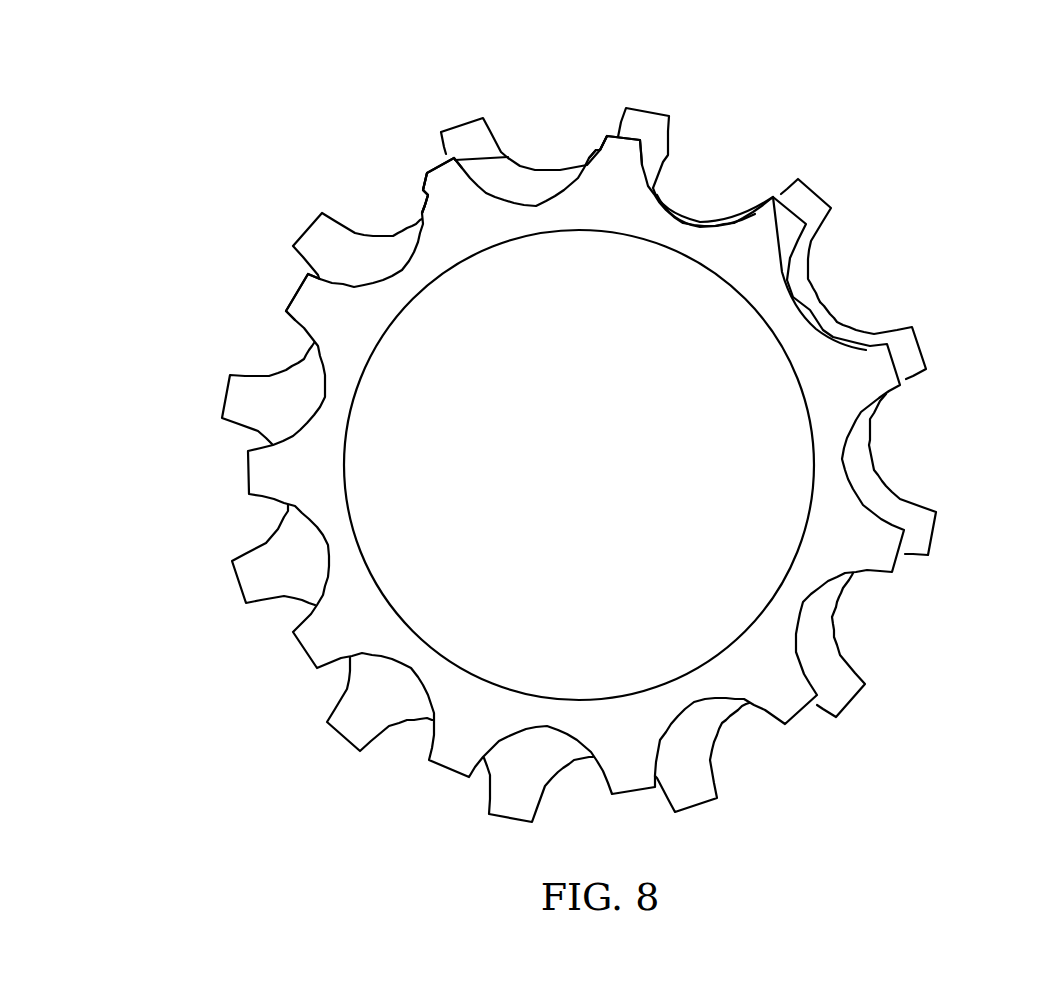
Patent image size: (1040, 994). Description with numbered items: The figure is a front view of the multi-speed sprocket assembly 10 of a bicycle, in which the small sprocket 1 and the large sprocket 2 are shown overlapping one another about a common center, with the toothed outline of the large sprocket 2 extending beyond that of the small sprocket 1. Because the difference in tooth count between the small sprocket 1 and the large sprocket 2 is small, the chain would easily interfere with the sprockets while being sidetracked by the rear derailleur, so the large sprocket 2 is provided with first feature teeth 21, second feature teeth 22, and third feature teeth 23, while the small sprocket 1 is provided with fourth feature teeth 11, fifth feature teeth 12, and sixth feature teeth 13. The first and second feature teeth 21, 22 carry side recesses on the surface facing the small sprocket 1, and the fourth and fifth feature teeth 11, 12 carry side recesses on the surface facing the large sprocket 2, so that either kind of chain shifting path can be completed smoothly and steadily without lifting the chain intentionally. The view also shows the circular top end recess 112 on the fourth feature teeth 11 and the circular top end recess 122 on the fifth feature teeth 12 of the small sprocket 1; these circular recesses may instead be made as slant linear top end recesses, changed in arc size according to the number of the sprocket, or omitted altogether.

The multi-speed sprocket assembly 10 is at (160, 312).
The small sprocket 1 is at (876, 556).
The large sprocket 2 is at (922, 350).
The fourth feature teeth 11 is at (630, 148).
The circular top end recess 112 is at (601, 137).
The fifth feature teeth 12 is at (440, 175).
The circular top end recess 122 is at (421, 178).
The sixth feature teeth 13 is at (300, 297).
The first feature teeth 21 is at (822, 200).
The second feature teeth 22 is at (662, 113).
The third feature teeth 23 is at (456, 131).